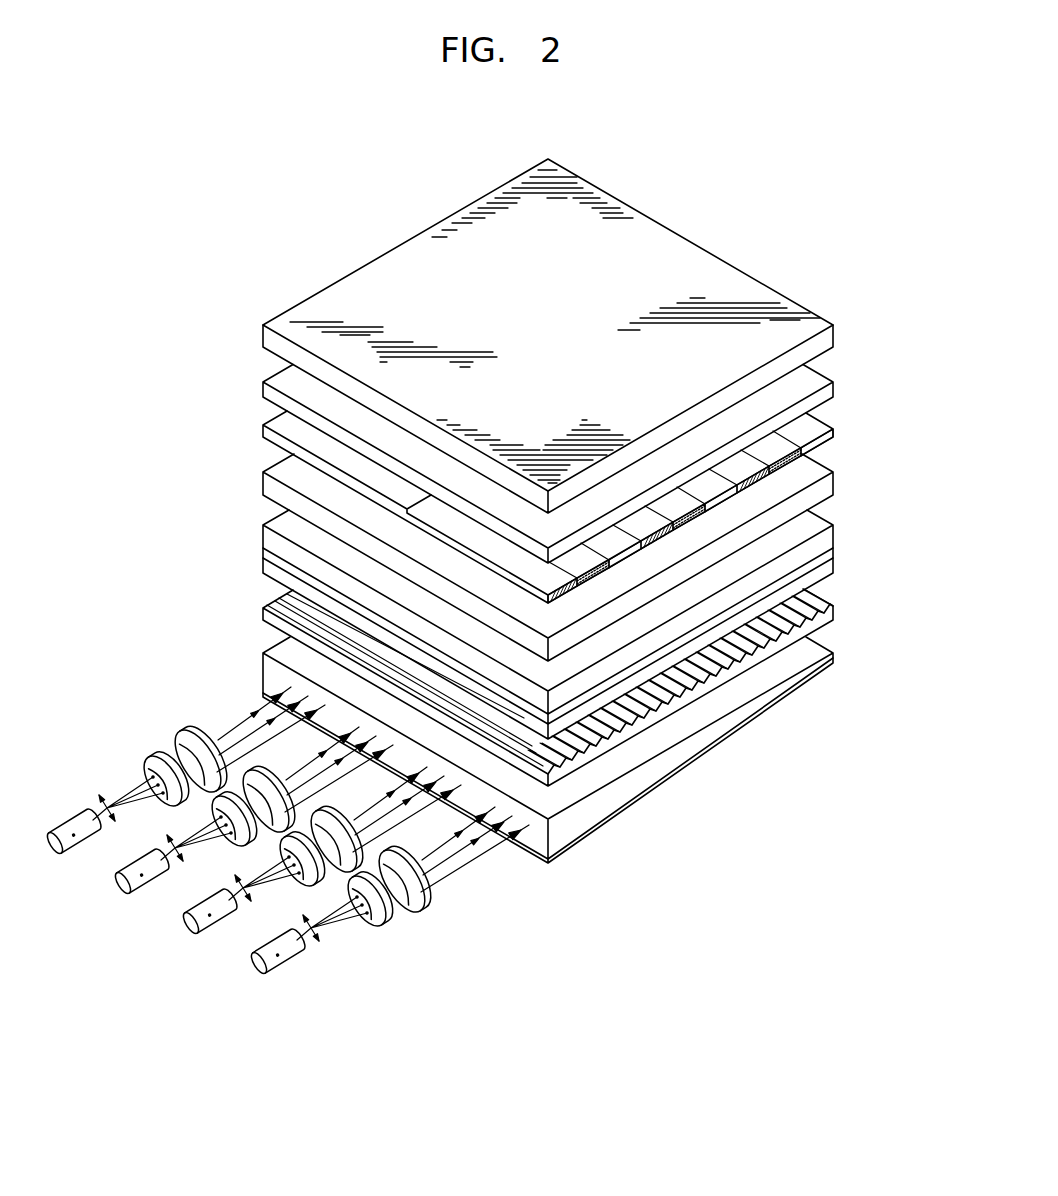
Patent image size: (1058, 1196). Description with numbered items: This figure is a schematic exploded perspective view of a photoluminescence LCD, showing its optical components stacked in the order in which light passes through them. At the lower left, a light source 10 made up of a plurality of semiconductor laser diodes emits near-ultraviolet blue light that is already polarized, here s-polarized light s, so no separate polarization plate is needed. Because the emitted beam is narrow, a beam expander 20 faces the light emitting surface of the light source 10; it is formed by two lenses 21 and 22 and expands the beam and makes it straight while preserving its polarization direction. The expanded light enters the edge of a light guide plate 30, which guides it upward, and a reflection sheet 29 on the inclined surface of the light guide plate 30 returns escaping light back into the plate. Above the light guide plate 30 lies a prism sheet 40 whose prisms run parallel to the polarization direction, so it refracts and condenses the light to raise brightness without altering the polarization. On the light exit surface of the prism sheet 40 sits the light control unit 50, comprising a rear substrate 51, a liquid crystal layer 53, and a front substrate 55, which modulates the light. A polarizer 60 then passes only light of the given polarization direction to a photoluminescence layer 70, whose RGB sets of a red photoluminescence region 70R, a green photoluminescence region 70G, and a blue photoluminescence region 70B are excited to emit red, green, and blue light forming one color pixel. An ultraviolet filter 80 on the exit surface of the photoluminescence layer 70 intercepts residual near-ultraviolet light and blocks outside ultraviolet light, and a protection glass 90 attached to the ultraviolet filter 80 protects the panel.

The light source 10 is at (290, 953).
The beam expander 20 is at (332, 859).
The lens 21 is at (382, 922).
The lens 22 is at (418, 905).
The s-polarized light s is at (350, 930).
The reflection sheet 29 is at (822, 680).
The light guide plate 30 is at (265, 672).
The prism sheet 40 is at (833, 616).
The light control unit 50 is at (490, 624).
The rear substrate 51 is at (520, 648).
The liquid crystal layer 53 is at (265, 552).
The front substrate 55 is at (265, 529).
The polarizer 60 is at (265, 476).
The photoluminescence layer 70 is at (604, 507).
The red photoluminescence region 70R is at (760, 473).
The green photoluminescence region 70G is at (797, 457).
The blue photoluminescence region 70B is at (823, 440).
The ultraviolet filter 80 is at (265, 388).
The protection glass 90 is at (265, 338).